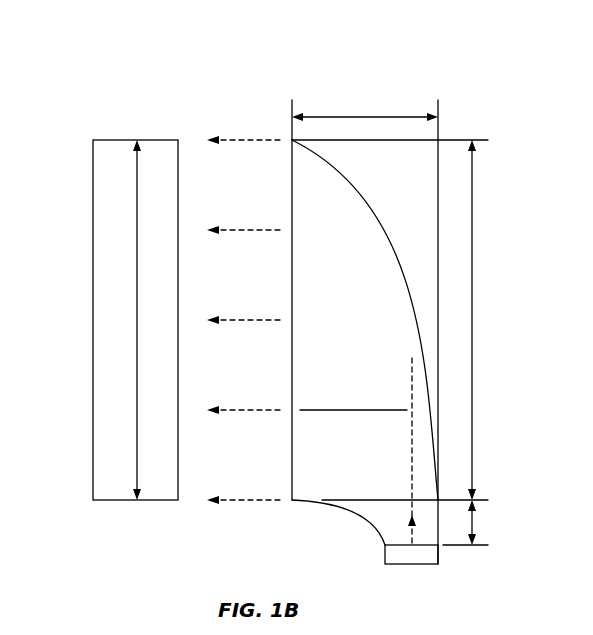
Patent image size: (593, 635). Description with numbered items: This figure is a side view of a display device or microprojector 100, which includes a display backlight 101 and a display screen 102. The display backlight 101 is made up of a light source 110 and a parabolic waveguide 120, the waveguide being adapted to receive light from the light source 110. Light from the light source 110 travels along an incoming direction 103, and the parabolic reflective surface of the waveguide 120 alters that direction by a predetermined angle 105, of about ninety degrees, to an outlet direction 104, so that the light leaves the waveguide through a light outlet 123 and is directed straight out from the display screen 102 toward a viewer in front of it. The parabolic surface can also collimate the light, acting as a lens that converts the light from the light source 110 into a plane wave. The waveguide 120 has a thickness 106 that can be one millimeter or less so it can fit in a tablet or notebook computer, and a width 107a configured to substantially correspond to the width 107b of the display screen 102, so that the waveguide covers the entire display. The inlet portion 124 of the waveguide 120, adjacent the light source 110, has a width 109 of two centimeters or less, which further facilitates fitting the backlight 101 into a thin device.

The display device 100 is at (190, 48).
The display backlight 101 is at (434, 72).
The display screen 102 is at (106, 118).
The incoming direction 103 is at (410, 537).
The outlet direction 104 is at (255, 322).
The predetermined angle 105 is at (404, 378).
The thickness 106 is at (365, 117).
The width of the waveguide 107a is at (472, 316).
The width of the display screen 107b is at (137, 312).
The width of the inlet portion 109 is at (472, 523).
The light source 110 is at (455, 568).
The parabolic waveguide 120 is at (426, 274).
The light outlet 123 is at (270, 170).
The inlet portion 124 is at (345, 529).